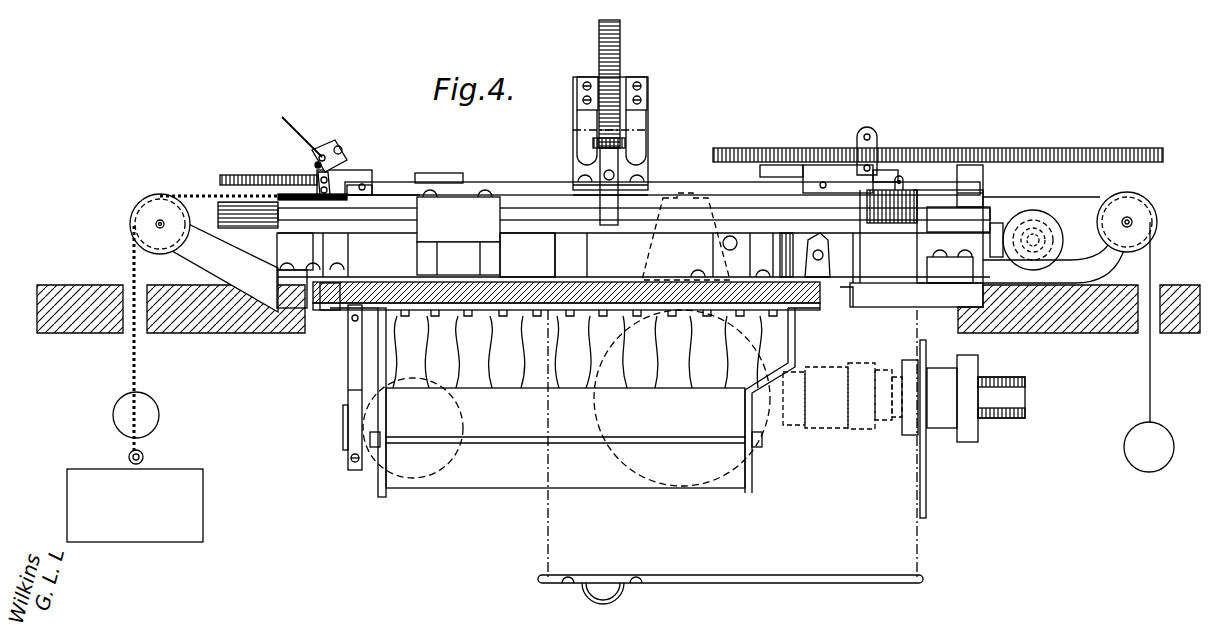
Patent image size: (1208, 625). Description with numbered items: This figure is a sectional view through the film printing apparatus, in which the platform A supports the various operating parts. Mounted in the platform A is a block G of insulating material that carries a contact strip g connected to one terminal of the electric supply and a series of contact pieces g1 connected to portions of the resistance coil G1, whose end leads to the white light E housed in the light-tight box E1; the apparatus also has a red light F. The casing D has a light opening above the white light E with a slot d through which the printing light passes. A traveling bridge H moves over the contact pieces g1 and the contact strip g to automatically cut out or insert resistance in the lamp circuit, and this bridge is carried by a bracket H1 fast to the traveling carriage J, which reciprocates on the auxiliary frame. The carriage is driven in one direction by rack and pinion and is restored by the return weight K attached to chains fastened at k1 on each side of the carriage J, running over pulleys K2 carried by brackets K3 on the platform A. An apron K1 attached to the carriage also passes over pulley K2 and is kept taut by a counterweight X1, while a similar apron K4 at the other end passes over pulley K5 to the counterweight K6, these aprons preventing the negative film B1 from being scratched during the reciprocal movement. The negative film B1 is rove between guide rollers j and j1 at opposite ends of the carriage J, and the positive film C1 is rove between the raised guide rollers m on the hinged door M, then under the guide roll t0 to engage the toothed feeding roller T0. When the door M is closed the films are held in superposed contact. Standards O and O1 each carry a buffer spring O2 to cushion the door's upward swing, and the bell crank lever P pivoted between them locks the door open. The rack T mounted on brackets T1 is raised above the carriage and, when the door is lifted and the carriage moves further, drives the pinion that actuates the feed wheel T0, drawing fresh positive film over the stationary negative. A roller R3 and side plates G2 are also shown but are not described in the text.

The platform A is at (60, 285).
The bracket K3 is at (198, 240).
The pulley K2 is at (134, 210).
The apron K1 is at (172, 196).
The counterweight X1 is at (159, 415).
The return weight K is at (203, 490).
The negative film B1 is at (270, 177).
The chain fastening point k1 is at (343, 200).
The raised guide roller m is at (335, 142).
The positive film C1 is at (294, 116).
The guide roller j is at (354, 186).
The traveling carriage J is at (378, 198).
The hinged door M is at (403, 183).
The bracket H1 is at (470, 200).
The traveling bridge H is at (500, 262).
The bell crank lever P is at (620, 44).
The standard O is at (640, 152).
The buffer spring O2 is at (583, 124).
The standard O1 is at (588, 165).
The slot d is at (685, 193).
The casing D is at (657, 255).
The contact pieces g1 is at (513, 277).
The rack T is at (1076, 148).
The bracket T1 is at (773, 163).
The guide roll t0 is at (864, 130).
The toothed feeding roller T0 is at (880, 178).
The guide roller j1 is at (900, 178).
The apron K4 is at (1093, 198).
The pulley K5 is at (1148, 212).
The roller R3 is at (1040, 268).
The counterweight K6 is at (1145, 472).
The contact strip g is at (350, 285).
The block of insulating material G is at (345, 305).
The red light F is at (360, 424).
The resistance coil G1 is at (460, 478).
The white light E is at (666, 480).
The side plates G2 is at (378, 470).
The light-tight box E1 is at (926, 545).